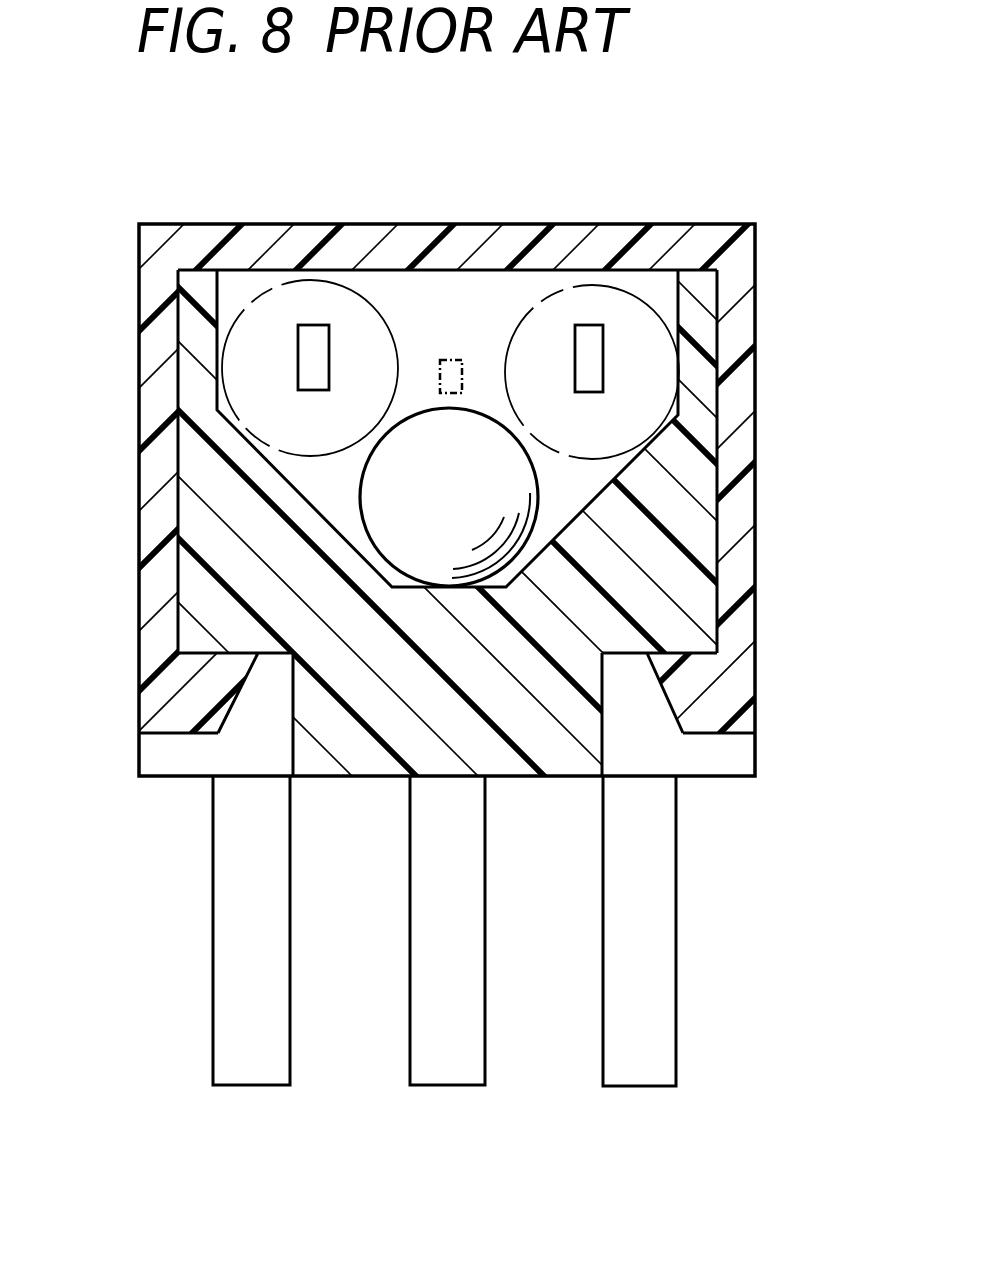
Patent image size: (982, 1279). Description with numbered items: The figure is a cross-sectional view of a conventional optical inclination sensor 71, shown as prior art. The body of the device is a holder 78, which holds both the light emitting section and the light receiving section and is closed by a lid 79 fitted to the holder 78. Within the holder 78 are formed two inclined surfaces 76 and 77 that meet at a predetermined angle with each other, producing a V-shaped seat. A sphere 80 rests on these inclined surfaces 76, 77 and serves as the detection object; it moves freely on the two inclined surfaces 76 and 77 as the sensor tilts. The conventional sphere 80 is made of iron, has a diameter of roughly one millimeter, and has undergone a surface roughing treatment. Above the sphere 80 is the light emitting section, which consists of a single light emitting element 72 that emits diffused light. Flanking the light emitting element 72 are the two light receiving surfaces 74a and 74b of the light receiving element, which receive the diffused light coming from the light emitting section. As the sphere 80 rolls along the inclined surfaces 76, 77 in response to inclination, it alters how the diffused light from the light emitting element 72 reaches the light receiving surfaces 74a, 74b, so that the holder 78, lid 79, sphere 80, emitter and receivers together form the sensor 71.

The optical inclination sensor 71 is at (775, 193).
The light emitting element 72 is at (462, 373).
The light receiving surface 74a is at (312, 360).
The light receiving surface 74b is at (593, 360).
The inclined surface 76 is at (297, 492).
The inclined surface 77 is at (593, 515).
The holder 78 is at (668, 577).
The lid 79 is at (577, 237).
The sphere 80 is at (393, 505).